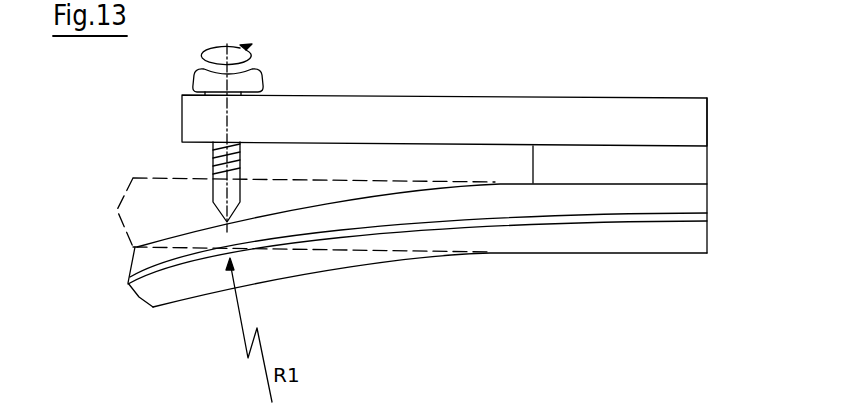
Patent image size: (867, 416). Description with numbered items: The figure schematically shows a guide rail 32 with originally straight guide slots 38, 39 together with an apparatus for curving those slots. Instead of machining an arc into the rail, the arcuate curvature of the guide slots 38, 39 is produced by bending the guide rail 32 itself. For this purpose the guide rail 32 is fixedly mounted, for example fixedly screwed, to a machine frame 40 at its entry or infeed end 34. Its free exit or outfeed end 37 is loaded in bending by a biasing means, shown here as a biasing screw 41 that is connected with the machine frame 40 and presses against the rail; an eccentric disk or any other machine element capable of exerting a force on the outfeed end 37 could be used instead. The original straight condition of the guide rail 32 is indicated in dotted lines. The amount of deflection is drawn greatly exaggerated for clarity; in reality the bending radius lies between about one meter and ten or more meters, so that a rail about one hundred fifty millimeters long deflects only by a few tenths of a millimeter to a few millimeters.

The guide rail 32 is at (417, 274).
The entry or infeed end 34 is at (708, 238).
The free exit or outfeed end 37 is at (139, 297).
The guide slot 38 is at (167, 272).
The guide slot 39 is at (457, 258).
The machine frame 40 is at (530, 98).
The biasing screw 41 is at (258, 78).